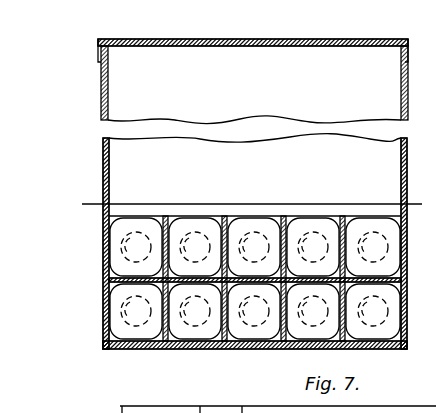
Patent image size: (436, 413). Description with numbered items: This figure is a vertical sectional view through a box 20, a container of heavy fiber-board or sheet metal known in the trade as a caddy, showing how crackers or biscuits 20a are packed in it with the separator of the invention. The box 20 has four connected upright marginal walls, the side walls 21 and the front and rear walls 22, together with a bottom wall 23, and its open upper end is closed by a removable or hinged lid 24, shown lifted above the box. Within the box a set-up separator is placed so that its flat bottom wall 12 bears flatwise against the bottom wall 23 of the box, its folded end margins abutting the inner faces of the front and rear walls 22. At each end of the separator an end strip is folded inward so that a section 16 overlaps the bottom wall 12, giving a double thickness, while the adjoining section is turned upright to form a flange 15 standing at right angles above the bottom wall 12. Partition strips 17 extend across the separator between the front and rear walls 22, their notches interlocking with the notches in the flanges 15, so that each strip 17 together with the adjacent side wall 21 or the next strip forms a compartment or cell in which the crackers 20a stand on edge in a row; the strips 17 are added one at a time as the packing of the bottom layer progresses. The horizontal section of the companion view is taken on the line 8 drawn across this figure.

The section line 8— 8 is at (79, 175).
The bottom wall 12 is at (103, 263).
The upright flange 15 is at (398, 288).
The overlapping end section 16 is at (407, 345).
The partition strip 17 is at (165, 216).
The box 20 is at (100, 176).
The crackers or biscuits 20a is at (188, 363).
The side wall 21 is at (408, 166).
The front and rear wall 22 is at (366, 82).
The bottom wall of box 23 is at (256, 346).
The lid 24 is at (255, 39).